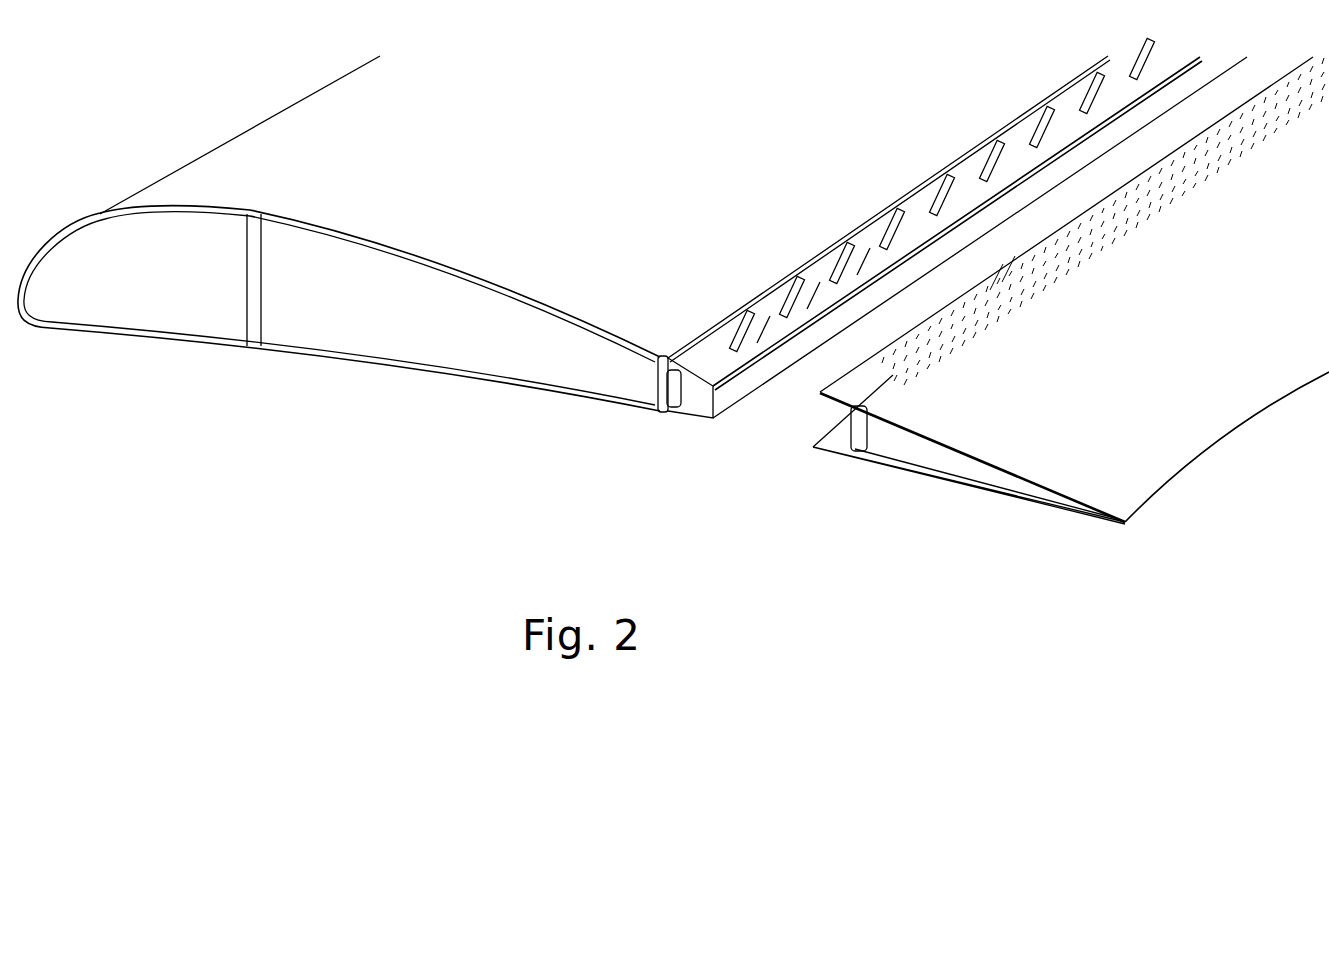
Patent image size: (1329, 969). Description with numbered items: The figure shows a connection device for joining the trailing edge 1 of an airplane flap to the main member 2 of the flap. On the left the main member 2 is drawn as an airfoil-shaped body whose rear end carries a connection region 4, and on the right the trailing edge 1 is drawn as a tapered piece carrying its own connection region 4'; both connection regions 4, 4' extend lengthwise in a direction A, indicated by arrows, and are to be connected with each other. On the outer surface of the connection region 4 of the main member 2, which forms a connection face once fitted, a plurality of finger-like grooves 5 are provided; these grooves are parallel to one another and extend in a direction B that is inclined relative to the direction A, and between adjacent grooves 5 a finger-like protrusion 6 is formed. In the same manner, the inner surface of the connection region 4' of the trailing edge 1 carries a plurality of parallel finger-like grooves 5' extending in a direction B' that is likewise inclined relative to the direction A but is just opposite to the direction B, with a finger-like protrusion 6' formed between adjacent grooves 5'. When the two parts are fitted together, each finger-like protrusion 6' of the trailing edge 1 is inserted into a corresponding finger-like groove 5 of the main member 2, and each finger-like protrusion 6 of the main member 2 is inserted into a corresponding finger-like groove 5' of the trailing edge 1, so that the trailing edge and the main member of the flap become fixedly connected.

The trailing edge of the flap 1 is at (1037, 463).
The main member of the flap 2 is at (466, 237).
The connection region 4 is at (952, 281).
The finger-like grooves 5 is at (806, 355).
The finger-like protrusion 6 is at (932, 194).
The connection region 4' is at (961, 461).
The finger-like grooves 5' is at (1072, 300).
The finger-like protrusion 6' is at (1012, 250).
The direction A is at (970, 218).
The direction B is at (1022, 105).
The direction B' is at (1040, 286).